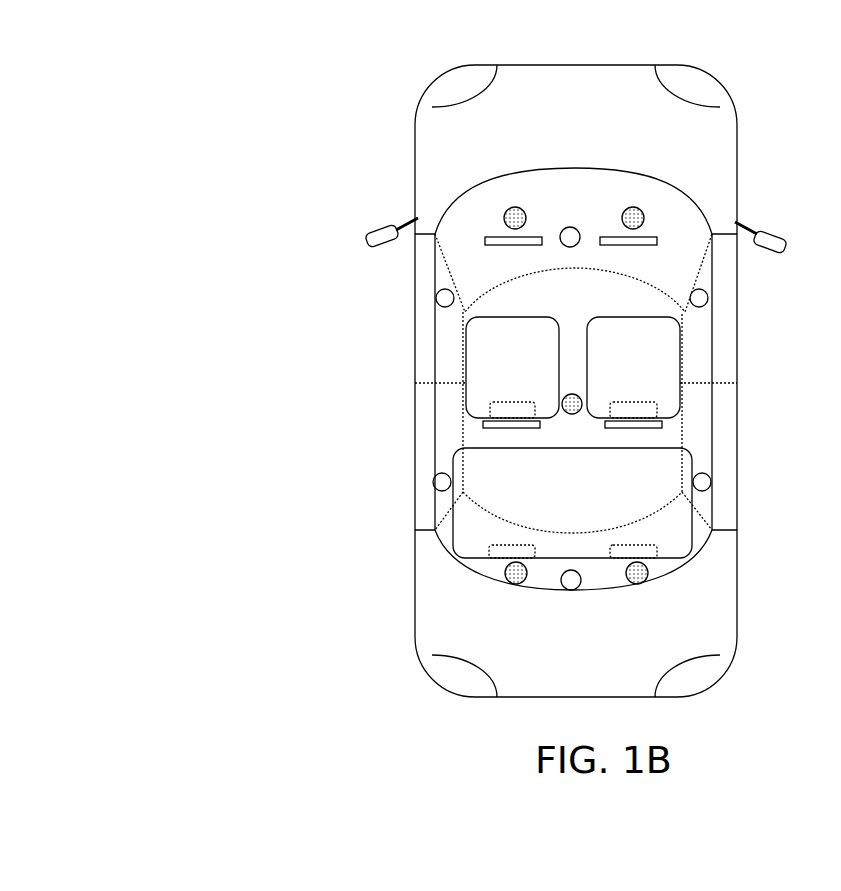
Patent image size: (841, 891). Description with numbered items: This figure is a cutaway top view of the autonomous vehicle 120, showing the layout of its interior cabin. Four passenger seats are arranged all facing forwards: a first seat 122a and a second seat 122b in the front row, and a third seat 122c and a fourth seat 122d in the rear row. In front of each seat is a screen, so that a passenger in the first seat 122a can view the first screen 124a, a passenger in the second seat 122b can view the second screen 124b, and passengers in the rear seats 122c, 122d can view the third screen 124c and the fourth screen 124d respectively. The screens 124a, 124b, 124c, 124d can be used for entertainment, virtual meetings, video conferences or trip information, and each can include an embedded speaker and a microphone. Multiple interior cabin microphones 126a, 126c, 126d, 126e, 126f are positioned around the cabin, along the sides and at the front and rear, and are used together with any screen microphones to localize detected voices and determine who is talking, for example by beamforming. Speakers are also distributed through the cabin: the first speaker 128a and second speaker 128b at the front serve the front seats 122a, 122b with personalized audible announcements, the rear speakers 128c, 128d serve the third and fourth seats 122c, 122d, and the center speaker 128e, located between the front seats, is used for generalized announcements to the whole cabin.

The vehicle 120 is at (96, 54).
The first seat 122a is at (531, 372).
The second seat 122b is at (654, 372).
The third seat 122c is at (530, 505).
The fourth seat 122d is at (651, 505).
The first screen 124a is at (482, 242).
The second screen 124b is at (662, 241).
The third screen 124c is at (480, 424).
The fourth screen 124d is at (666, 430).
The microphone 126a is at (432, 300).
The microphone 126c is at (711, 303).
The microphone 126d is at (714, 488).
The microphone 126e is at (565, 227).
The microphone 126f is at (564, 593).
The first speaker 128a is at (509, 206).
The second speaker 128b is at (631, 205).
The third speaker 128c is at (505, 586).
The fourth speaker 128d is at (628, 586).
The center speaker 128e is at (572, 391).